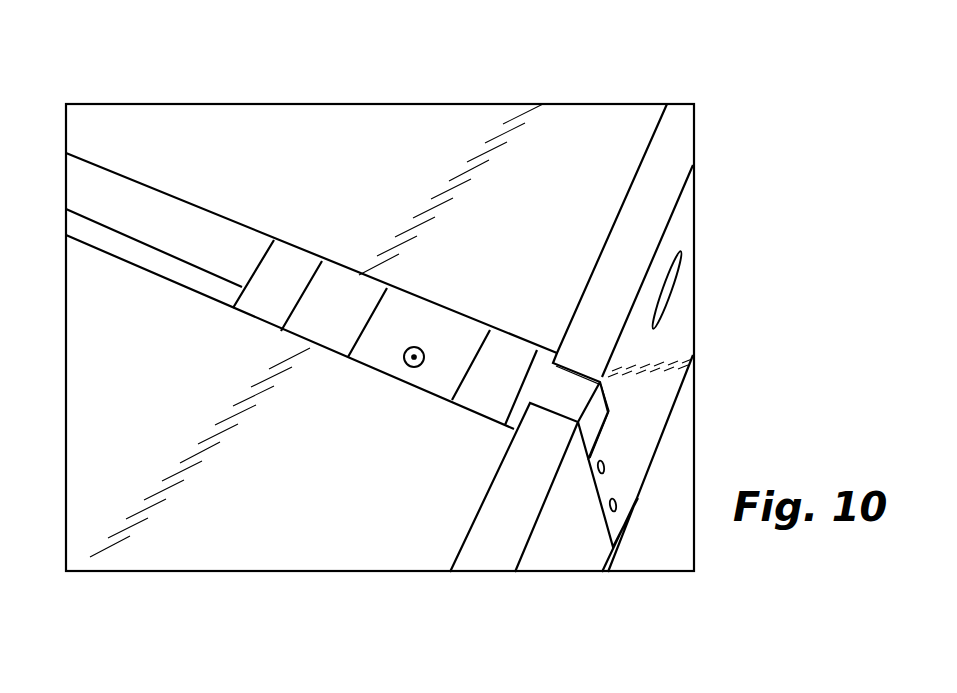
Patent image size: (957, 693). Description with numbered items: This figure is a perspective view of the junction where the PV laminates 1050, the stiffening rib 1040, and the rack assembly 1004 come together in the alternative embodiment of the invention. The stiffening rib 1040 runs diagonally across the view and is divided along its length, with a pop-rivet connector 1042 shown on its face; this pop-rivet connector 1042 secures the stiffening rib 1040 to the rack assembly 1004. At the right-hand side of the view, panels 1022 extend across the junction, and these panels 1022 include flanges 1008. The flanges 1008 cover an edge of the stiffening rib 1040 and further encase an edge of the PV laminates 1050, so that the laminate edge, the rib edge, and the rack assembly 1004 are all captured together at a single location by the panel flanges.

The rack assembly 1004 is at (193, 255).
The stiffening rib 1040 is at (386, 355).
The pop-rivet connector 1042 is at (427, 355).
The PV laminates 1050 is at (455, 127).
The flanges 1008 is at (502, 550).
The panels 1022 is at (588, 552).